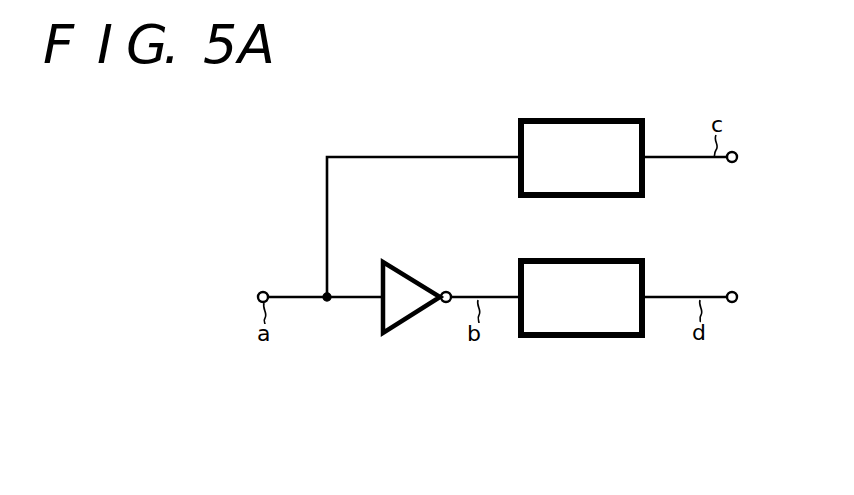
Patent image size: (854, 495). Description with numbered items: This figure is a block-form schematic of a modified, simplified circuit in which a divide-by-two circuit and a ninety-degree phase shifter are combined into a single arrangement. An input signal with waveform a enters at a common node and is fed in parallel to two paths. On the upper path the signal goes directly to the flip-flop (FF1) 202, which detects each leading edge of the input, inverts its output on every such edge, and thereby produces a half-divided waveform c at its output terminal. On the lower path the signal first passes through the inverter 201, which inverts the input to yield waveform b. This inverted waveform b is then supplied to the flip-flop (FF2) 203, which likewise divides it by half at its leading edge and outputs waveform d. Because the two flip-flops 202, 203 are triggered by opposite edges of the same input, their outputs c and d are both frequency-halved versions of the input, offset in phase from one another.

The inverter 201 is at (421, 285).
The flip-flop (FF1) 202 is at (597, 119).
The flip-flop (FF2) 203 is at (599, 259).